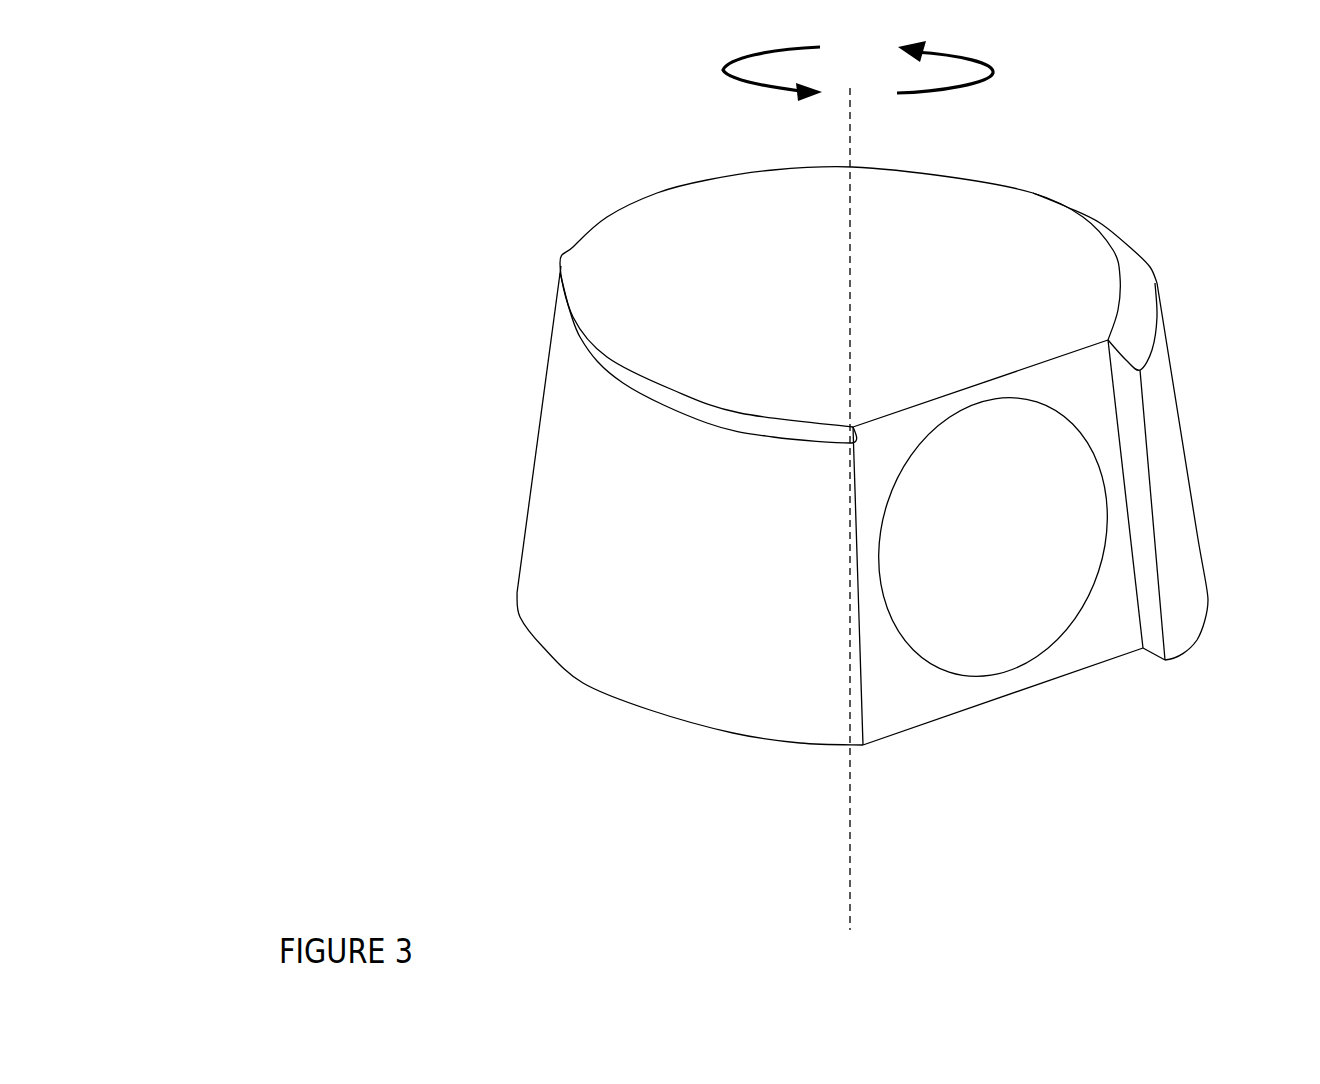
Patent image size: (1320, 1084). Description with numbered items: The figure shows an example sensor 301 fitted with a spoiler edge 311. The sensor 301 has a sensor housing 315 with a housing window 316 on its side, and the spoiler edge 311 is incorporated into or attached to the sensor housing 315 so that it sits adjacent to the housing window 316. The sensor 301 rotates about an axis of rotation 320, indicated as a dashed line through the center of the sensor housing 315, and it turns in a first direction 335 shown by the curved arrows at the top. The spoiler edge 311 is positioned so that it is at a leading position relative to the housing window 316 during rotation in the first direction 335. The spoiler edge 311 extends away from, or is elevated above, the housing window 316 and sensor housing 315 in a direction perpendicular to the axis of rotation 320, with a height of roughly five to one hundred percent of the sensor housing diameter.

The sensor 301 is at (850, 469).
The spoiler edge 311 is at (1153, 517).
The sensor housing 315 is at (572, 420).
The housing window 316 is at (908, 650).
The axis of rotation 320 is at (850, 110).
The first direction 335 is at (723, 70).